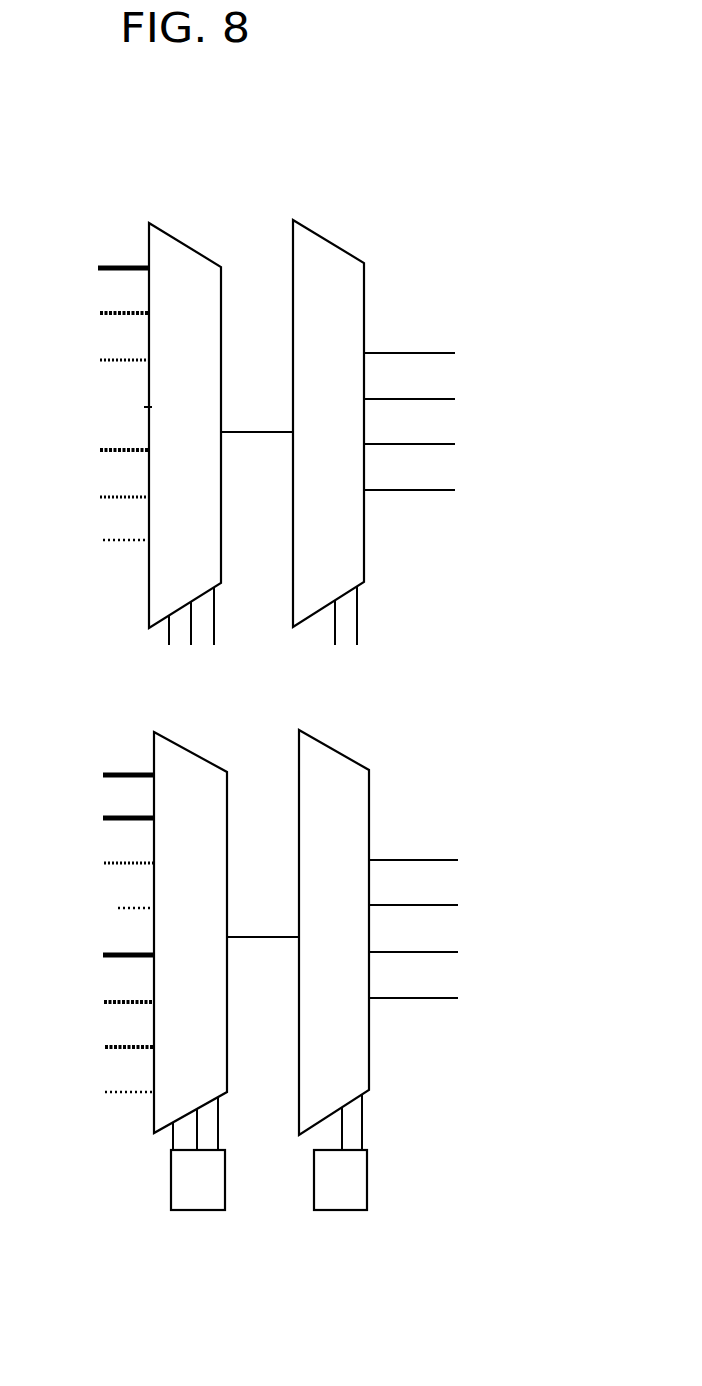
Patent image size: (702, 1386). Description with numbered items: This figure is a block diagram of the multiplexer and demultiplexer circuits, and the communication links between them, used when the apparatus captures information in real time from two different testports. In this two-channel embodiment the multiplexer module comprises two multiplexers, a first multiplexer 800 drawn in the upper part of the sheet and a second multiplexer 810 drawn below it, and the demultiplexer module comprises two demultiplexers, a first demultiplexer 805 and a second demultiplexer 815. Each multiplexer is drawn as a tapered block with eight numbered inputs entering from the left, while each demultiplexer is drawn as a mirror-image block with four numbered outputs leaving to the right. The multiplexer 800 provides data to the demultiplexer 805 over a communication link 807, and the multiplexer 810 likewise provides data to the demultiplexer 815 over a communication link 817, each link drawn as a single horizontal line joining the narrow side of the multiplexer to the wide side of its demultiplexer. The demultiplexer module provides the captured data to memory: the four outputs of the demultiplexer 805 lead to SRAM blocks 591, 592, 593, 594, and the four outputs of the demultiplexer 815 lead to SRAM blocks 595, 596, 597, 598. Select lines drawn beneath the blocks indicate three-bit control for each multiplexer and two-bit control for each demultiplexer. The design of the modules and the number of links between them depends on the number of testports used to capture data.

The multiplexer 800 is at (198, 282).
The demultiplexer 805 is at (342, 285).
The communication link 807 is at (250, 432).
The SRAM block 591 is at (418, 353).
The SRAM block 592 is at (437, 399).
The SRAM block 593 is at (437, 444).
The SRAM block 594 is at (437, 490).
The multiplexer 810 is at (197, 1092).
The demultiplexer 815 is at (358, 1080).
The communication link 817 is at (253, 937).
The SRAM block 595 is at (415, 860).
The SRAM block 596 is at (430, 905).
The SRAM block 597 is at (440, 952).
The SRAM block 598 is at (432, 998).